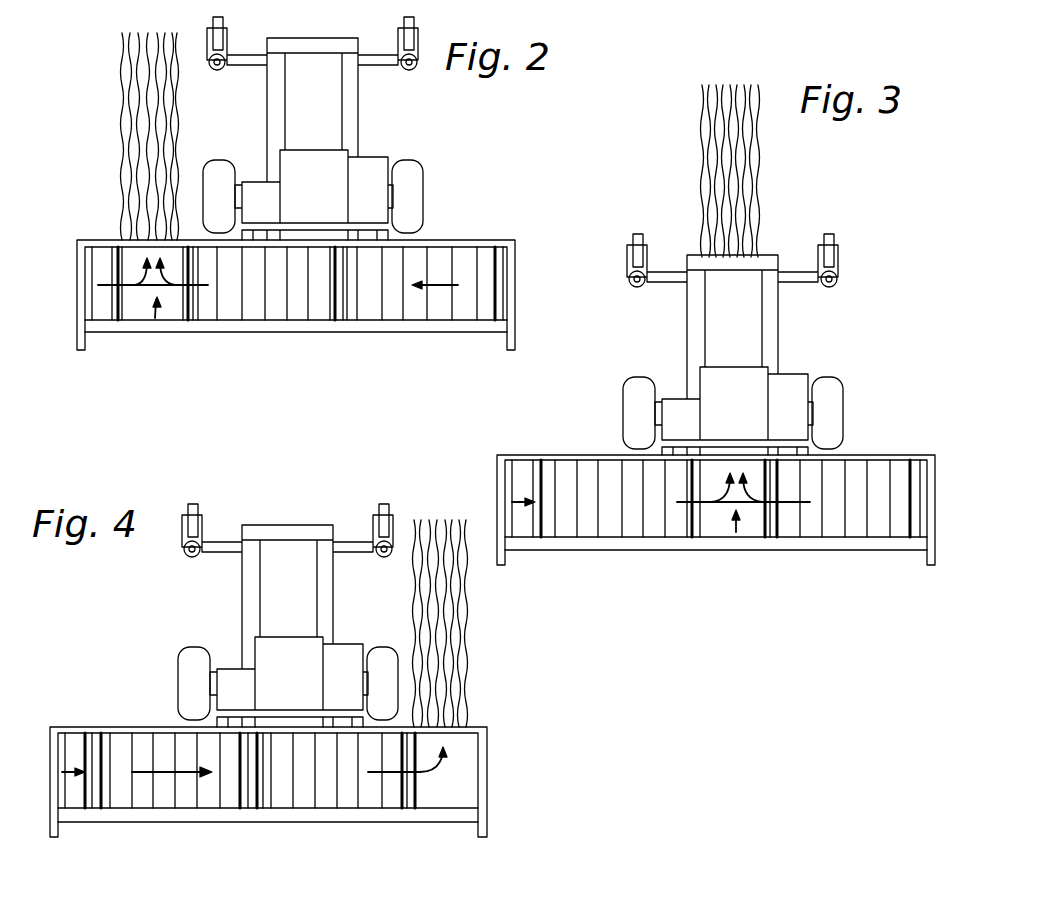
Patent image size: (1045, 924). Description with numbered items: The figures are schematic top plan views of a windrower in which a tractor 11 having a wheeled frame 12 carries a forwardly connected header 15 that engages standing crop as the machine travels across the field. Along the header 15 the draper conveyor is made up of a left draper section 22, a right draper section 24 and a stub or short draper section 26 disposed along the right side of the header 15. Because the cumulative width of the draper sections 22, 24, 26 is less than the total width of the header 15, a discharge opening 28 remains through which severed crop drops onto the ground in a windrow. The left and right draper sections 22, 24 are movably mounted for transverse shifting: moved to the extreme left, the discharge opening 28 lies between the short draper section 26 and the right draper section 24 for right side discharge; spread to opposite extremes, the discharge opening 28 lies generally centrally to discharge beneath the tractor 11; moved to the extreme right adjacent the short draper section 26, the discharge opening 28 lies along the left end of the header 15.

In FIG. 2, the tractor 11 is at (352, 116).
In FIG. 3, the tractor 11 is at (765, 333).
In FIG. 4, the tractor 11 is at (286, 526).
In FIG. 2, the wheeled frame 12 is at (425, 177).
In FIG. 3, the wheeled frame 12 is at (733, 413).
In FIG. 4, the wheeled frame 12 is at (288, 683).
In FIG. 2, the header 15 is at (410, 332).
In FIG. 3, the header 15 is at (815, 550).
In FIG. 4, the header 15 is at (290, 815).
In FIG. 2, the left draper section 22 is at (462, 250).
In FIG. 3, the left draper section 22 is at (877, 522).
In FIG. 4, the left draper section 22 is at (350, 797).
In FIG. 2, the right draper section 24 is at (275, 305).
In FIG. 3, the right draper section 24 is at (608, 525).
In FIG. 4, the right draper section 24 is at (163, 797).
In FIG. 2, the short draper section 26 is at (101, 310).
In FIG. 3, the short draper section 26 is at (522, 530).
In FIG. 4, the short draper section 26 is at (73, 800).
In FIG. 2, the discharge opening 28 is at (157, 312).
In FIG. 3, the discharge opening 28 is at (736, 525).
In FIG. 4, the discharge opening 28 is at (465, 763).